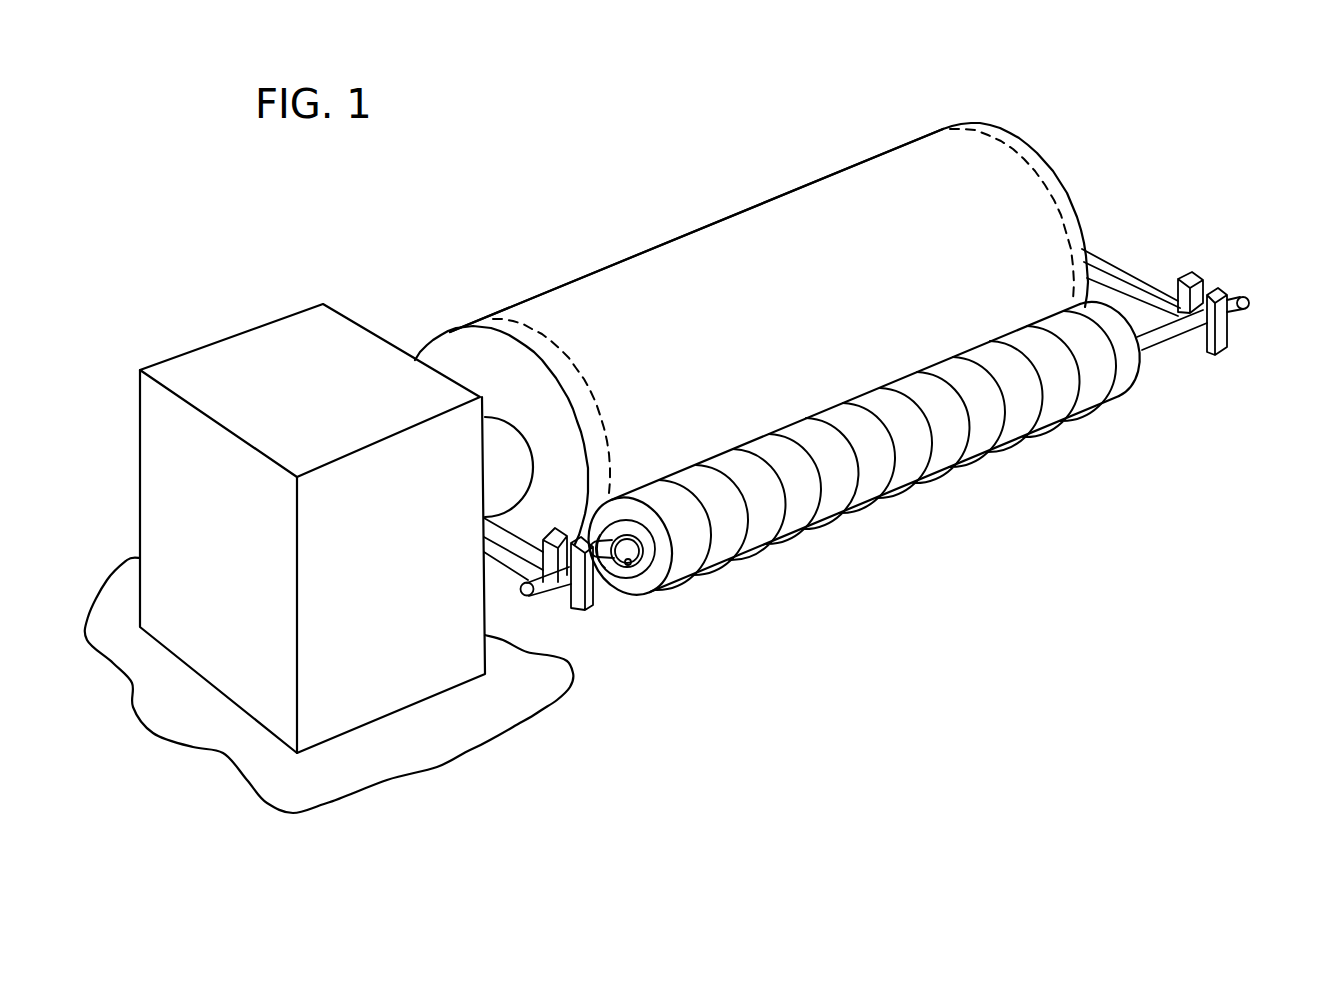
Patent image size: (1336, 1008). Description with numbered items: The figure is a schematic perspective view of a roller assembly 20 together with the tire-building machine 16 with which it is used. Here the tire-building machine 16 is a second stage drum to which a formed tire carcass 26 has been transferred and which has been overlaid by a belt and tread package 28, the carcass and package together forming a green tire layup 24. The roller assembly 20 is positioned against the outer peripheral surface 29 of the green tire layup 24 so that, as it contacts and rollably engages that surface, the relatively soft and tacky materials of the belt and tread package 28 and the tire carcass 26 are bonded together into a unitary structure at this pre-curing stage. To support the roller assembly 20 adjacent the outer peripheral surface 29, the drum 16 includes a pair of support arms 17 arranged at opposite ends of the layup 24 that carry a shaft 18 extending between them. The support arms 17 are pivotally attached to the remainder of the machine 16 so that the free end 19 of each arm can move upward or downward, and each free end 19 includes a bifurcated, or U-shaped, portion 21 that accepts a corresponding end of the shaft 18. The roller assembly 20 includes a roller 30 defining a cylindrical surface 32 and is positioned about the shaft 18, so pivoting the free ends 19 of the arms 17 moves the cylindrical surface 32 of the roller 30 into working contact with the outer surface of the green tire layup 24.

The tire-building machine 16 is at (460, 343).
The support arms 17 is at (505, 557).
The shaft 18 is at (1158, 335).
The free end 19 is at (588, 610).
The roller assembly 20 is at (1108, 462).
The bifurcated portion 21 is at (587, 588).
The green tire layup 24 is at (832, 198).
The tire carcass 26 is at (490, 317).
The belt and tread package 28 is at (678, 265).
The outer peripheral surface 29 is at (1015, 198).
The roller 30 is at (833, 517).
The cylindrical surface 32 is at (932, 470).